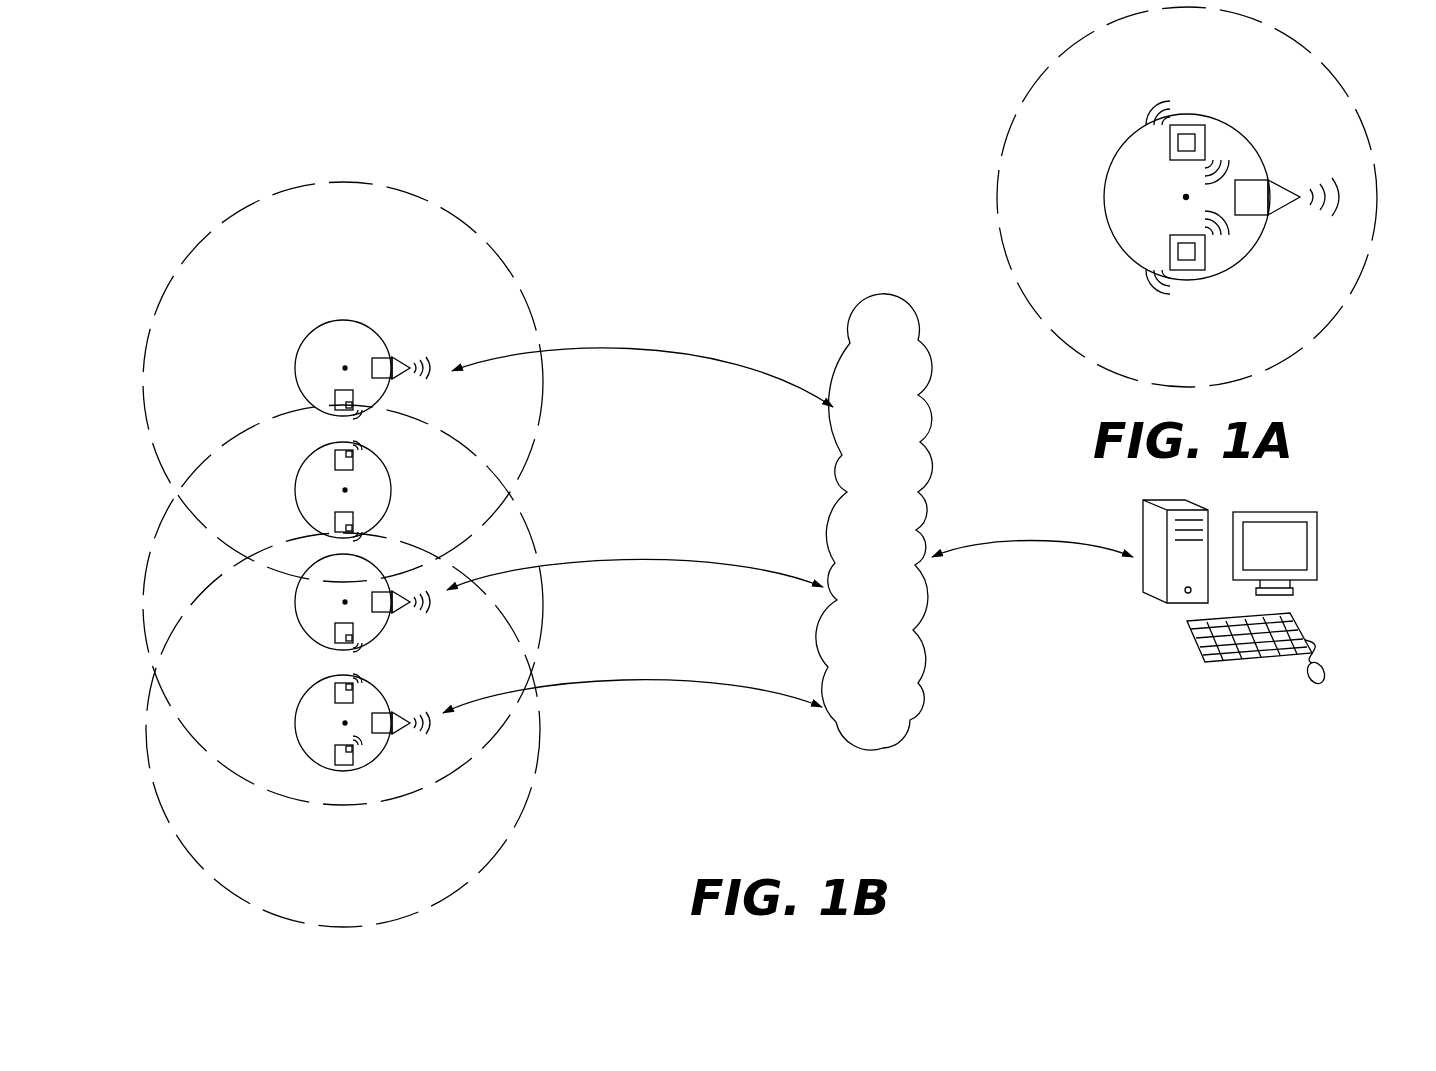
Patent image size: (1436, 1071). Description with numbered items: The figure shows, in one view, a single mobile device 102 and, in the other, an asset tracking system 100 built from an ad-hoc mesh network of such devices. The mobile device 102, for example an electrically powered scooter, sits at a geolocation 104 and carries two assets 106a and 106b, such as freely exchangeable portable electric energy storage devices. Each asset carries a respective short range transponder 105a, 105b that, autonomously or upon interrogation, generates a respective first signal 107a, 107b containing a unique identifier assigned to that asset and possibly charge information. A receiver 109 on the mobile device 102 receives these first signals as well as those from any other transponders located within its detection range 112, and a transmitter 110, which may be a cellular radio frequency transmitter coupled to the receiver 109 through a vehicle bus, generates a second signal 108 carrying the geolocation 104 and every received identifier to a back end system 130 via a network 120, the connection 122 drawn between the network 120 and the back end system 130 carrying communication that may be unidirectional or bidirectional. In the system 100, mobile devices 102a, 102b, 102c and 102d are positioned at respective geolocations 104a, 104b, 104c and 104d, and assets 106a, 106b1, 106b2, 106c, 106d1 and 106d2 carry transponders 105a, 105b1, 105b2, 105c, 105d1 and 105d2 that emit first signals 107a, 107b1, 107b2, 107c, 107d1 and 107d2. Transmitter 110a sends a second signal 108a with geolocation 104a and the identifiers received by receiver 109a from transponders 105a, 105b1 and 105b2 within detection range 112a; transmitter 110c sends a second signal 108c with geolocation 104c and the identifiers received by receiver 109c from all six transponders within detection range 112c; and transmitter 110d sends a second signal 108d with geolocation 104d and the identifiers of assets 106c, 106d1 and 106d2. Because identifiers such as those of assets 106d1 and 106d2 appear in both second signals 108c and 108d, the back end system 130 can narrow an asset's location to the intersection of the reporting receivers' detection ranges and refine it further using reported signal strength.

In FIG. 1B, the asset tracking system 100 is at (597, 134).
In FIG. 1A, the mobile device 102 is at (1245, 128).
In FIG. 1B, the mobile device 102a is at (296, 368).
In FIG. 1B, the mobile device 102b is at (296, 490).
In FIG. 1B, the mobile device 102c is at (296, 602).
In FIG. 1B, the mobile device 102d is at (296, 735).
In FIG. 1A, the geolocation 104 is at (1184, 197).
In FIG. 1B, the geolocation 104a is at (344, 369).
In FIG. 1B, the geolocation 104b is at (344, 492).
In FIG. 1B, the geolocation 104c is at (344, 604).
In FIG. 1B, the geolocation 104d is at (344, 725).
In FIG. 1B, the short range transponder 105a is at (353, 405).
In FIG. 1A, the short range transponder 105a is at (1196, 142).
In FIG. 1A, the short range transponder 105b is at (1178, 251).
In FIG. 1B, the short range transponder 105b1 is at (335, 457).
In FIG. 1B, the short range transponder 105b2 is at (353, 528).
In FIG. 1B, the short range transponder 105c is at (353, 638).
In FIG. 1B, the short range transponder 105d1 is at (346, 687).
In FIG. 1B, the short range transponder 105d2 is at (351, 752).
In FIG. 1B, the asset 106a is at (344, 390).
In FIG. 1A, the asset 106a is at (1189, 125).
In FIG. 1A, the asset 106b is at (1170, 250).
In FIG. 1B, the asset 106b1 is at (353, 458).
In FIG. 1B, the asset 106b2 is at (353, 522).
In FIG. 1B, the asset 106c is at (335, 633).
In FIG. 1B, the asset 106d1 is at (353, 690).
In FIG. 1B, the asset 106d2 is at (353, 758).
In FIG. 1B, the first signal 107a is at (363, 415).
In FIG. 1A, the first signal 107a is at (1210, 163).
In FIG. 1A, the first signal 107b is at (1212, 238).
In FIG. 1B, the first signal 107b1 is at (355, 443).
In FIG. 1B, the first signal 107b2 is at (362, 541).
In FIG. 1B, the first signal 107c is at (365, 648).
In FIG. 1B, the first signal 107d1 is at (362, 678).
In FIG. 1B, the first signal 107d2 is at (364, 740).
In FIG. 1A, the second signal 108 is at (1345, 197).
In FIG. 1B, the second signal 108a is at (432, 371).
In FIG. 1B, the second signal 108c is at (432, 601).
In FIG. 1B, the second signal 108d is at (432, 722).
In FIG. 1A, the receiver 109 is at (1255, 215).
In FIG. 1B, the receiver 109a is at (390, 360).
In FIG. 1B, the receiver 109c is at (395, 594).
In FIG. 1A, the transmitter 110 is at (1288, 195).
In FIG. 1B, the transmitter 110a is at (393, 362).
In FIG. 1B, the transmitter 110c is at (392, 611).
In FIG. 1B, the transmitter 110d is at (393, 726).
In FIG. 1A, the detection range 112 is at (1330, 65).
In FIG. 1B, the detection range 112a is at (522, 289).
In FIG. 1B, the detection range 112c is at (541, 622).
In FIG. 1B, the network 120 is at (888, 713).
In FIG. 1B, the communication link 122 is at (1031, 546).
In FIG. 1B, the back-end system 130 is at (1312, 500).